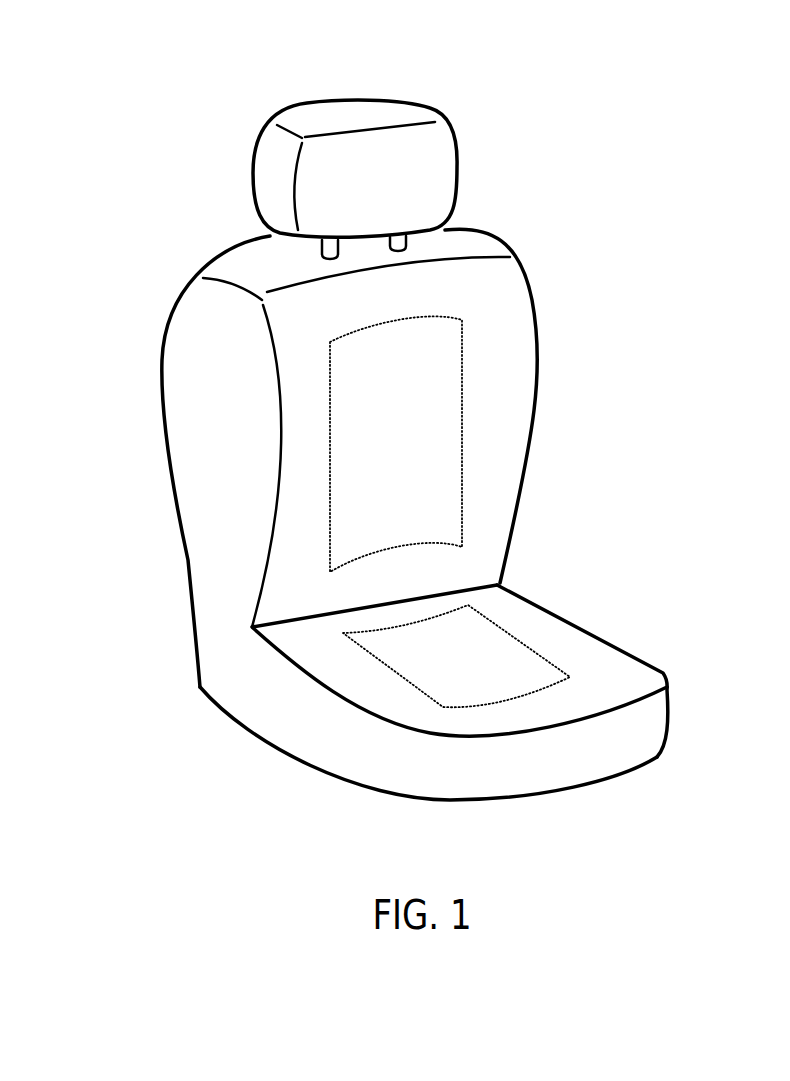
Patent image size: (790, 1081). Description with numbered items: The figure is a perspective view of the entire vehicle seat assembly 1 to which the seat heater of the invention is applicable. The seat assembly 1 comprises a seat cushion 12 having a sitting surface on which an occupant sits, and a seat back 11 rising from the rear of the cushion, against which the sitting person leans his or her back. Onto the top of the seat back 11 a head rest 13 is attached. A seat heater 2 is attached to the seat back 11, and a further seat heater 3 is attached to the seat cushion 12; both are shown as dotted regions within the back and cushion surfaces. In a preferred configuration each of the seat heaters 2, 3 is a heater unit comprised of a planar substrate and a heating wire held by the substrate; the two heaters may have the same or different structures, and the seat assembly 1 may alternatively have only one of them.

The vehicle seat assembly 1 is at (199, 203).
The seat back 11 is at (300, 428).
The seat cushion 12 is at (567, 653).
The head rest 13 is at (373, 107).
The seat heater 2 is at (443, 423).
The seat heater 3 is at (422, 667).